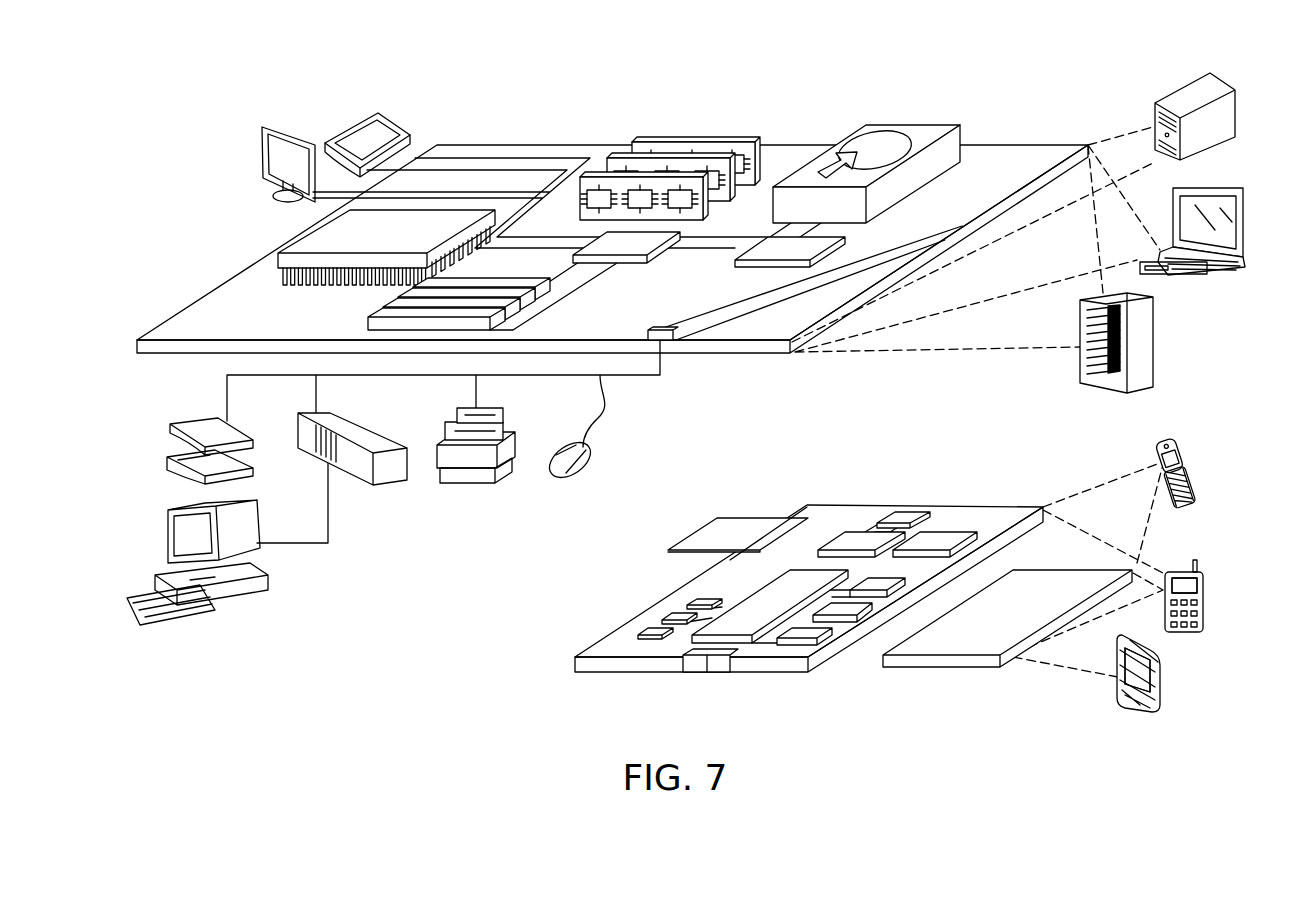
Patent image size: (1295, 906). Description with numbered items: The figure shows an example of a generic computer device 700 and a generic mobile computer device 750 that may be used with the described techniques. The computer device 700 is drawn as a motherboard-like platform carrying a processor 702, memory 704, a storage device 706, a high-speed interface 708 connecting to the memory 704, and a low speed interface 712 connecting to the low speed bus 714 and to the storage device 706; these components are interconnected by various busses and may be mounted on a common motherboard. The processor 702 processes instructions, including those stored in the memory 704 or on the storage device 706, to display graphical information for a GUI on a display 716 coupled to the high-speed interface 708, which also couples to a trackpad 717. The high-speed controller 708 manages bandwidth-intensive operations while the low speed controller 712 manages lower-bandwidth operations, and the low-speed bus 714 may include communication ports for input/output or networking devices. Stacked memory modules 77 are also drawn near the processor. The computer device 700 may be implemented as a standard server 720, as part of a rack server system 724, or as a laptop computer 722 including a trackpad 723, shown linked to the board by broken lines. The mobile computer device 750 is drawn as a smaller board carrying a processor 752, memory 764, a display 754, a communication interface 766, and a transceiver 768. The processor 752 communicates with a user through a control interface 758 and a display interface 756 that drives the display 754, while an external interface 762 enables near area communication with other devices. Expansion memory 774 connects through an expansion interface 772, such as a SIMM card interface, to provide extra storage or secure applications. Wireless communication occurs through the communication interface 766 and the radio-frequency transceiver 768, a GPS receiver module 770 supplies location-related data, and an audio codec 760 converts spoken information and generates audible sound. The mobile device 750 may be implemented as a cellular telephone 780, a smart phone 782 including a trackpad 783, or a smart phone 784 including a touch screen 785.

The computer device 700 is at (703, 344).
The processor 702 is at (303, 238).
The memory 704 is at (698, 140).
The storage device 706 is at (903, 124).
The high-speed interface 708 is at (640, 243).
The low speed interface 712 is at (762, 246).
The low speed bus 714 is at (666, 330).
The display 716 is at (267, 128).
The trackpad 717 is at (360, 124).
The standard server 720 is at (1176, 100).
The laptop computer 722 is at (1223, 188).
The trackpad 723 is at (1210, 266).
The rack server system 724 is at (1153, 345).
The memory cards 77 is at (392, 307).
The mobile computer device 750 is at (878, 564).
The processor 752 is at (742, 613).
The display 754 is at (1042, 587).
The display interface 756 is at (818, 640).
The control interface 758 is at (845, 615).
The audio codec 760 is at (880, 582).
The external interface 762 is at (707, 668).
The memory 764 is at (665, 620).
The communication interface 766 is at (858, 533).
The transceiver 768 is at (940, 537).
The GPS receiver module 770 is at (903, 512).
The expansion interface 772 is at (793, 515).
The expansion memory 774 is at (717, 518).
The cellular telephone 780 is at (1170, 442).
The smart phone 782 is at (1182, 570).
The trackpad 783 is at (1190, 592).
The smart phone 784 is at (1134, 640).
The touch screen 785 is at (1178, 672).